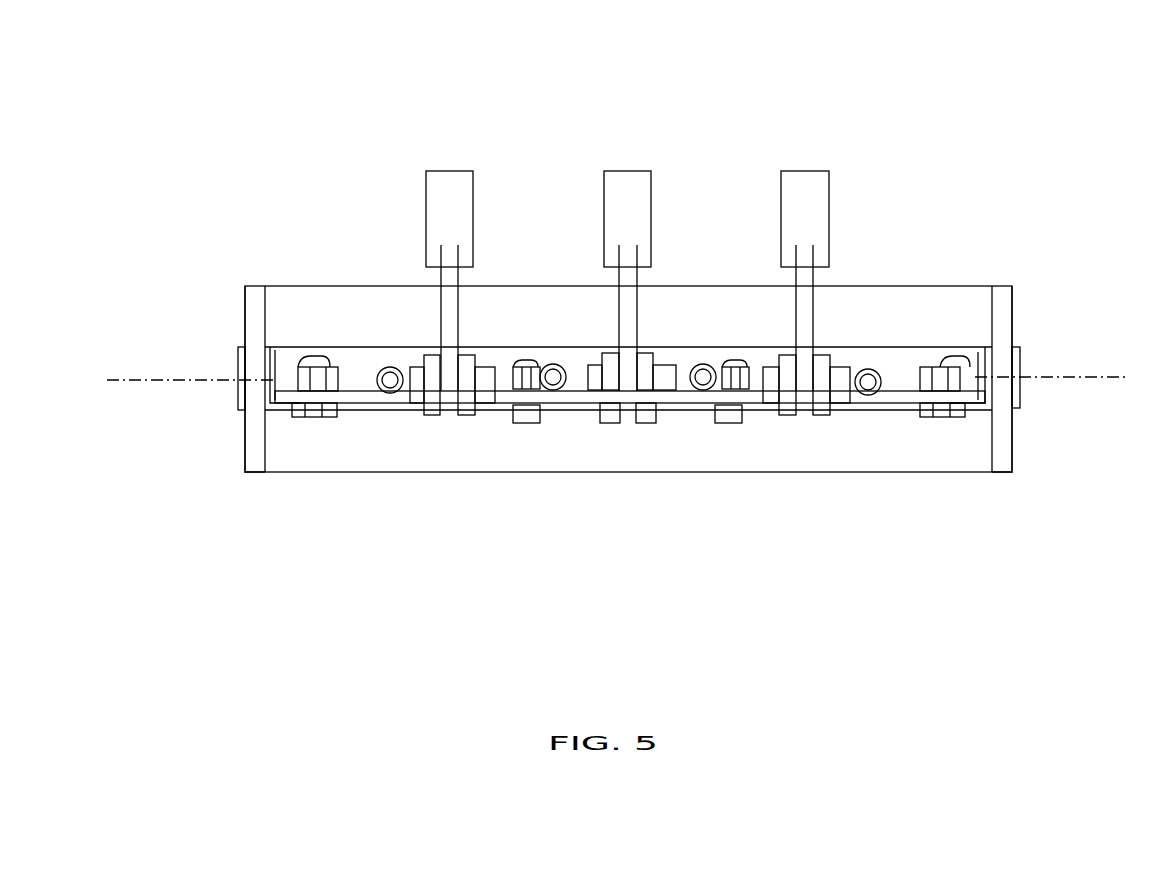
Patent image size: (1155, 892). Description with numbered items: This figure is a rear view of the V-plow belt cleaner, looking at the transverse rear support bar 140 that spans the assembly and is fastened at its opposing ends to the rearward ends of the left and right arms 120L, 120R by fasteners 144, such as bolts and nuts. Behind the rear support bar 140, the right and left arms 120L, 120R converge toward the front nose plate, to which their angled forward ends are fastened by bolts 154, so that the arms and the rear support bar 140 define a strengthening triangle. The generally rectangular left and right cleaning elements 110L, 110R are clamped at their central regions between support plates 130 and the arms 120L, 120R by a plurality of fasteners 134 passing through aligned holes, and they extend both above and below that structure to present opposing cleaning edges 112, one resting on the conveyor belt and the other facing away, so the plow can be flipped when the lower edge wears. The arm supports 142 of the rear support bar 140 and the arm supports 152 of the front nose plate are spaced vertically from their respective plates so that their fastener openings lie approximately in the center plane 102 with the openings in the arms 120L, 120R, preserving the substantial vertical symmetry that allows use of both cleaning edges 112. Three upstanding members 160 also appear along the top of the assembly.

The center plane 102 is at (133, 383).
The left cleaning element 110L is at (332, 286).
The right cleaning element 110R is at (944, 286).
The cleaning edge 112 is at (694, 286).
The left arm 120L is at (282, 368).
The right arm 120R is at (980, 362).
The support plate 130 is at (235, 400).
The fastener 134 is at (392, 362).
The rear support bar 140 is at (897, 393).
The arm support 142 is at (432, 415).
The fastener 144 is at (960, 423).
The arm support 152 is at (613, 425).
The bolt 154 is at (737, 368).
The counterweight 160 is at (447, 187).